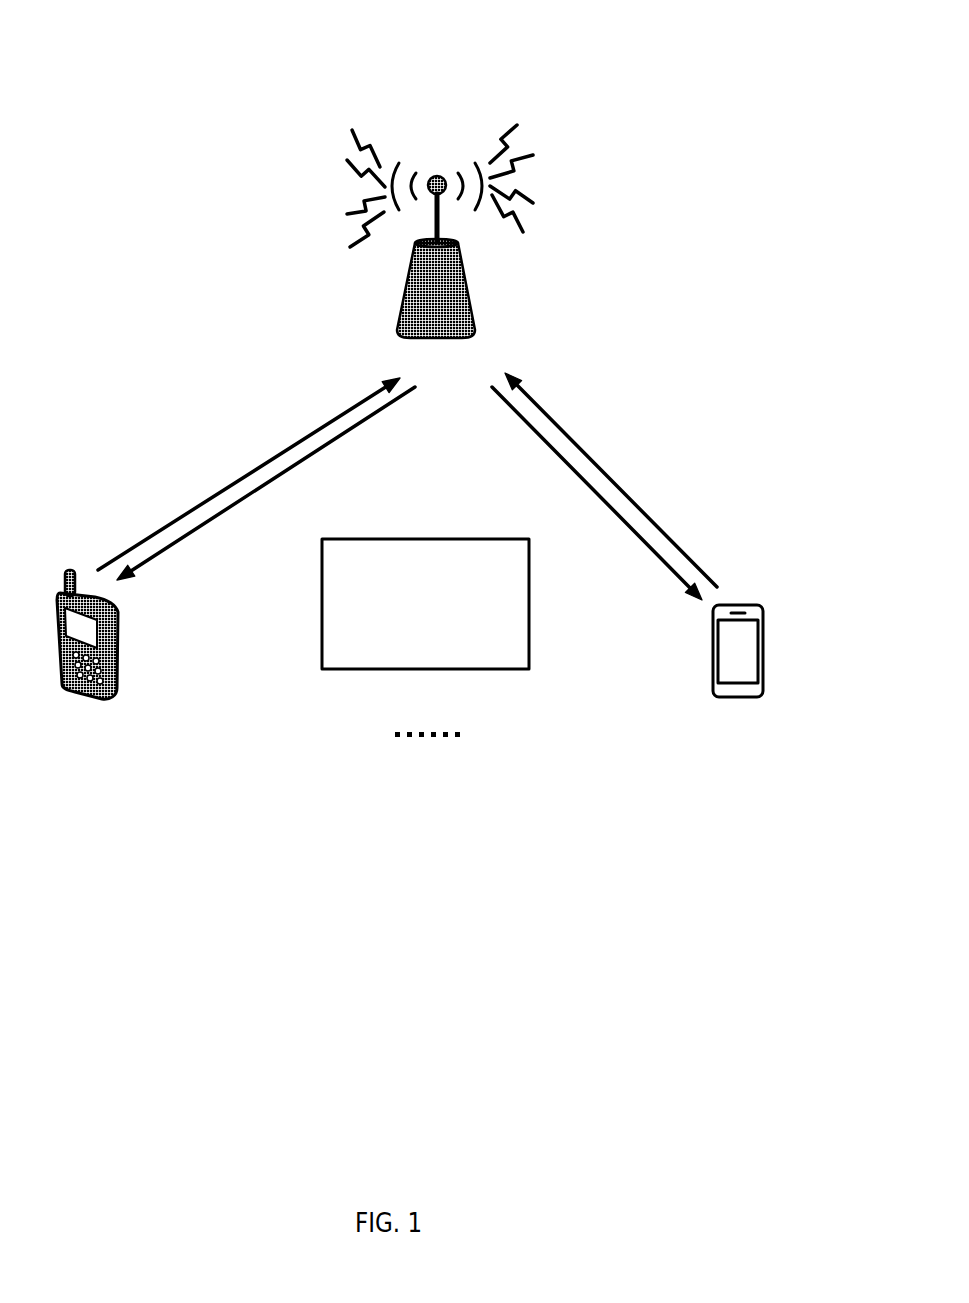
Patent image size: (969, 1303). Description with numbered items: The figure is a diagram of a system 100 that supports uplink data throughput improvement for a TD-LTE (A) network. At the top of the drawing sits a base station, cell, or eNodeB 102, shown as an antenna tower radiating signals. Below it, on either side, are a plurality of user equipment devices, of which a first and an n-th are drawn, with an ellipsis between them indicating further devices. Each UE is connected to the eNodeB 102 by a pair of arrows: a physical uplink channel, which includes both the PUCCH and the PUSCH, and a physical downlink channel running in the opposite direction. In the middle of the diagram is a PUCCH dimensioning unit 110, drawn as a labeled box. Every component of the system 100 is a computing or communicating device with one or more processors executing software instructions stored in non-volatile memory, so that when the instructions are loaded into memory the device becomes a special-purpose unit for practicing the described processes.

The system 100 is at (178, 76).
The eNodeB 102 is at (440, 264).
The PUCCH dimensioning unit 110 is at (425, 604).